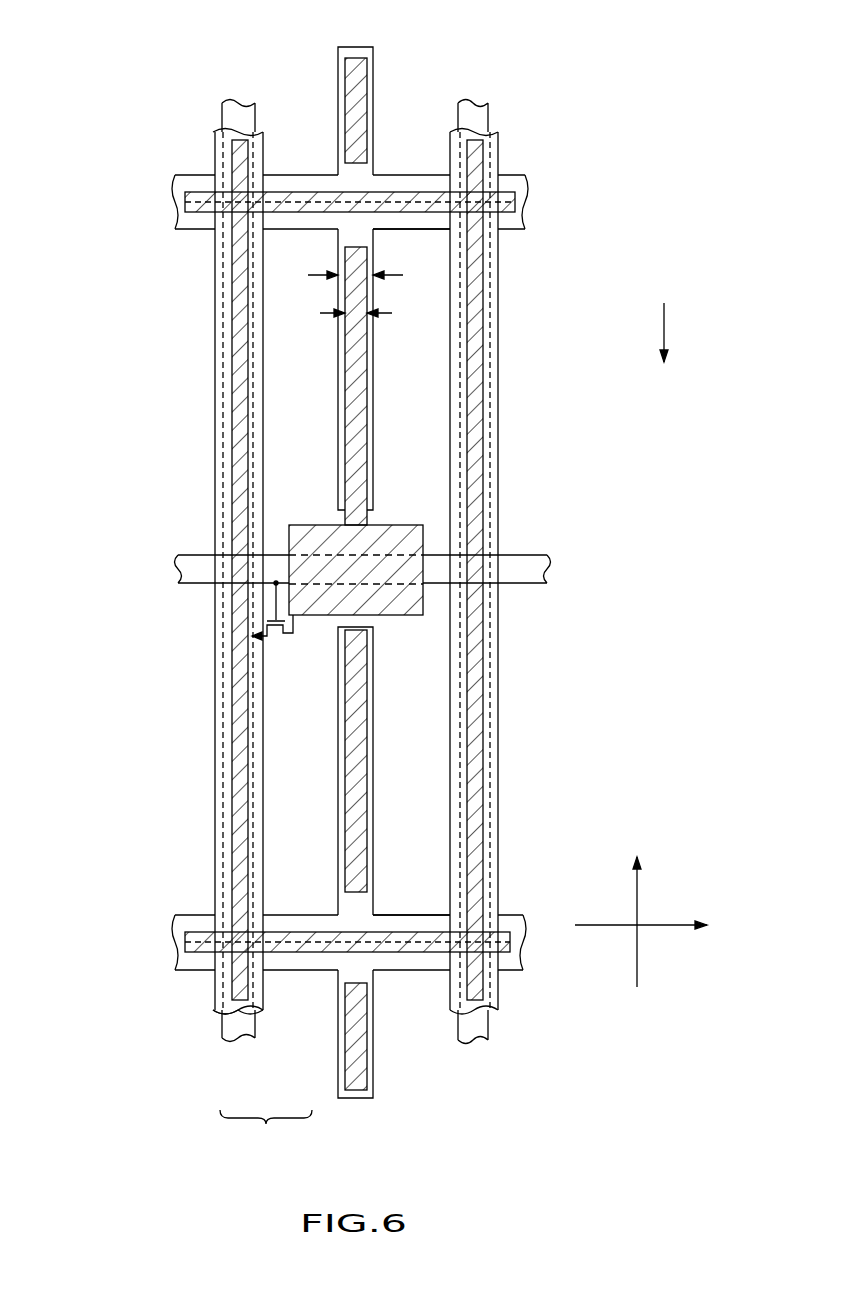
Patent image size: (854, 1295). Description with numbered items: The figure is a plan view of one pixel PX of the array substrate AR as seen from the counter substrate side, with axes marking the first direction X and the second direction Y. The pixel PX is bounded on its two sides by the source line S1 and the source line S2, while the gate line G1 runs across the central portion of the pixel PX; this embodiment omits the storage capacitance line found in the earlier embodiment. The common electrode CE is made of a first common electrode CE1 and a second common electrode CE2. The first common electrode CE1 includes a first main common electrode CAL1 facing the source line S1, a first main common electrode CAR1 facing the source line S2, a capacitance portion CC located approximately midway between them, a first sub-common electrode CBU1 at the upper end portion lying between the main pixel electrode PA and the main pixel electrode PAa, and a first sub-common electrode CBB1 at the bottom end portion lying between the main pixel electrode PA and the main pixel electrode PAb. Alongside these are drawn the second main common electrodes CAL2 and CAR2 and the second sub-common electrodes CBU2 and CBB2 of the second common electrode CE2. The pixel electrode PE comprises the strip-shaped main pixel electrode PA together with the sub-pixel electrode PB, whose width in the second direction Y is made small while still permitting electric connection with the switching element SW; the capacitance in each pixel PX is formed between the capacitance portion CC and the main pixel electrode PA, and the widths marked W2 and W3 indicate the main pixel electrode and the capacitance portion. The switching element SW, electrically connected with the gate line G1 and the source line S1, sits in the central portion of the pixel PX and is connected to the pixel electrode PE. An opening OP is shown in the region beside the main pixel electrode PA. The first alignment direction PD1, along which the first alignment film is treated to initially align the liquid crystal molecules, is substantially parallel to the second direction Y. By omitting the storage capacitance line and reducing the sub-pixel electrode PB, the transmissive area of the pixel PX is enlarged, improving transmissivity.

The pixel PX is at (356, 574).
The array substrate AR is at (603, 207).
The source line S1 is at (235, 103).
The source line S2 is at (468, 112).
The gate line G1 is at (187, 573).
The main pixel electrode PAa is at (352, 58).
The main pixel electrode PAb is at (357, 1087).
The main pixel electrode PA is at (367, 428).
The sub-pixel electrode PB is at (323, 615).
The pixel electrode PE is at (367, 569).
The capacitance portion CC is at (338, 413).
The first sub-common electrode CBU1 is at (410, 175).
The second sub-common electrode CBU2 is at (327, 192).
The first sub-common electrode CBB1 is at (418, 922).
The second sub-common electrode CBB2 is at (313, 953).
The first main common electrode CAL1 is at (215, 693).
The second main common electrode CAL2 is at (232, 650).
The first main common electrode CAR1 is at (497, 692).
The second main common electrode CAR2 is at (482, 645).
The switching element SW is at (283, 640).
The opening OP is at (422, 837).
The width W2 is at (360, 320).
The width W3 is at (355, 280).
The first alignment direction PD1 is at (667, 327).
The common electrode CE is at (266, 1129).
The first common electrode CE1 is at (267, 1003).
The second common electrode CE2 is at (258, 1010).
The first direction X is at (649, 924).
The second direction Y is at (636, 904).